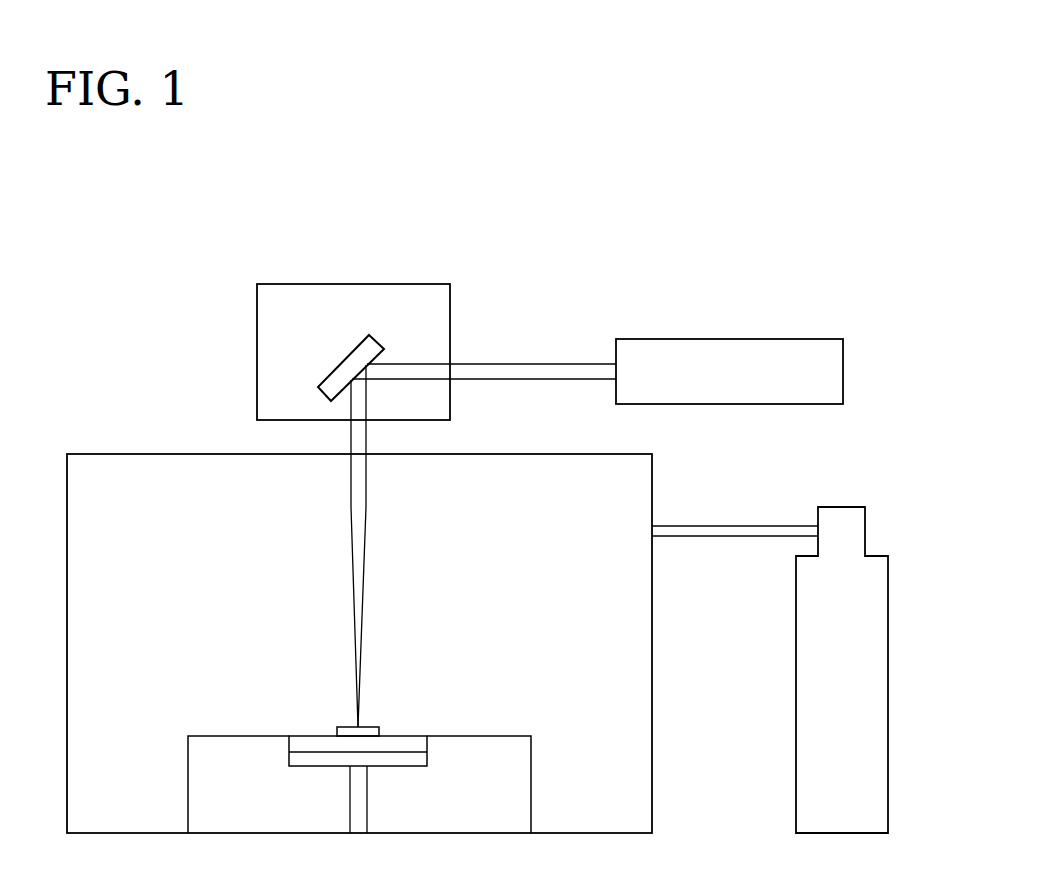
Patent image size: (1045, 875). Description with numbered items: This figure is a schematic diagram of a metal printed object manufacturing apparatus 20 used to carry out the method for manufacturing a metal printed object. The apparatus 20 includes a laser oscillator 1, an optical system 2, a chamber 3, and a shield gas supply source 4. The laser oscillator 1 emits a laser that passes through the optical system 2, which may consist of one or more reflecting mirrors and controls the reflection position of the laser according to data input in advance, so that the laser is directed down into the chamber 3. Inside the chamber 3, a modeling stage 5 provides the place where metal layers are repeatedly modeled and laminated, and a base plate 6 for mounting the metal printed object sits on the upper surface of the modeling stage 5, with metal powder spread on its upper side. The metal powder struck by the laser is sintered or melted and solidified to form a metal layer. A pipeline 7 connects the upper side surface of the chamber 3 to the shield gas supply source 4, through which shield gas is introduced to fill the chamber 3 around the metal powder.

The metal printed object manufacturing apparatus 20 is at (848, 238).
The laser oscillator 1 is at (729, 339).
The optical system 2 is at (257, 323).
The chamber 3 is at (125, 454).
The shield gas supply source 4 is at (840, 507).
The modeling stage 5 is at (427, 757).
The base plate 6 is at (399, 742).
The pipeline 7 is at (728, 536).